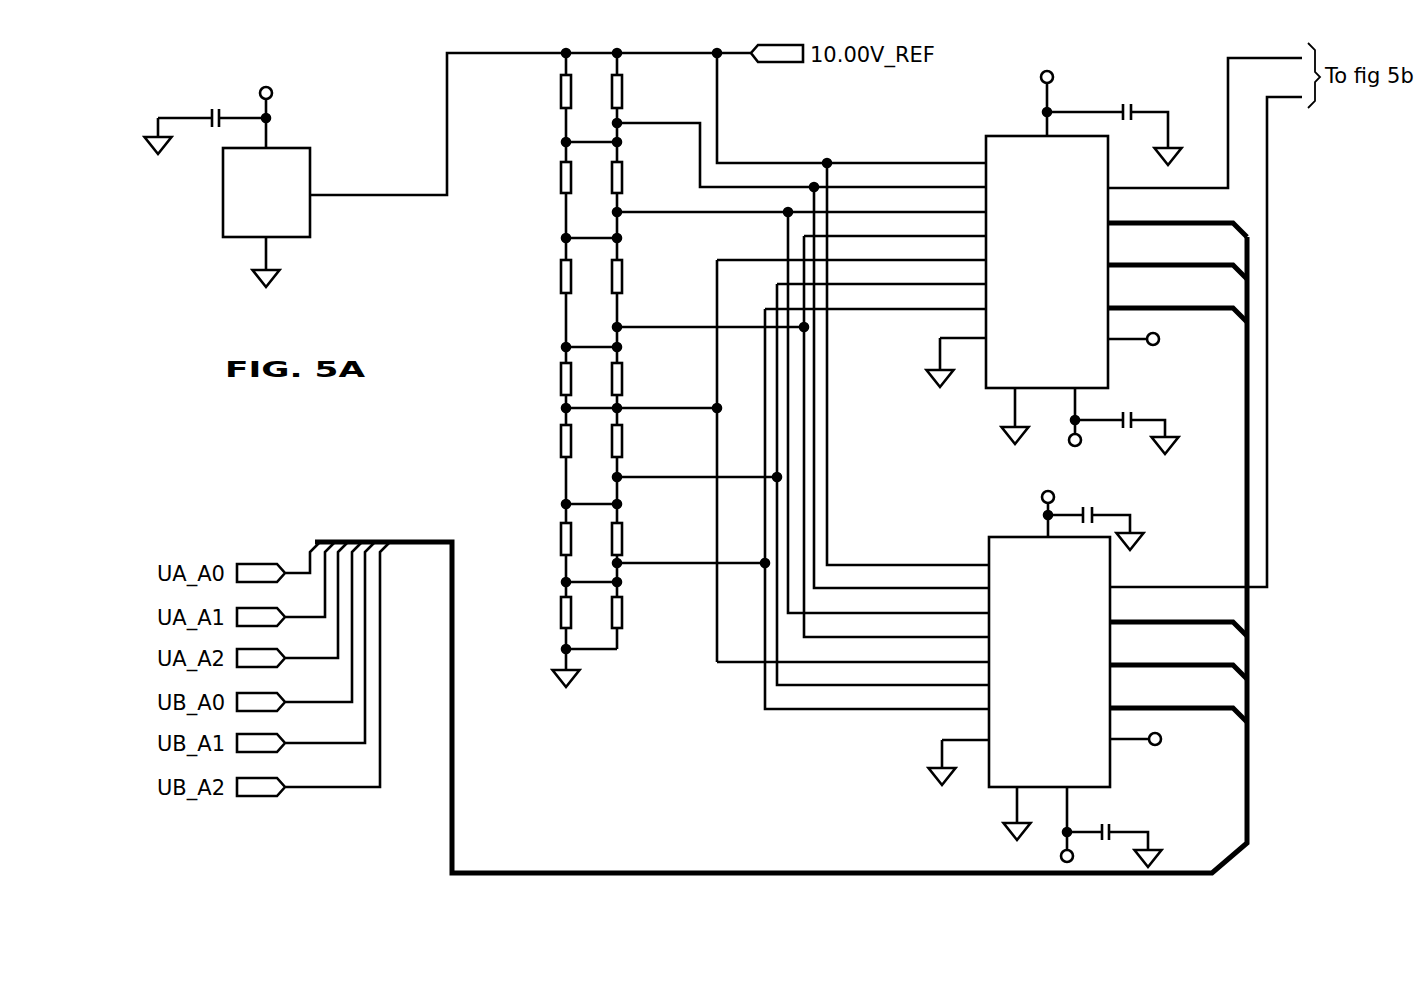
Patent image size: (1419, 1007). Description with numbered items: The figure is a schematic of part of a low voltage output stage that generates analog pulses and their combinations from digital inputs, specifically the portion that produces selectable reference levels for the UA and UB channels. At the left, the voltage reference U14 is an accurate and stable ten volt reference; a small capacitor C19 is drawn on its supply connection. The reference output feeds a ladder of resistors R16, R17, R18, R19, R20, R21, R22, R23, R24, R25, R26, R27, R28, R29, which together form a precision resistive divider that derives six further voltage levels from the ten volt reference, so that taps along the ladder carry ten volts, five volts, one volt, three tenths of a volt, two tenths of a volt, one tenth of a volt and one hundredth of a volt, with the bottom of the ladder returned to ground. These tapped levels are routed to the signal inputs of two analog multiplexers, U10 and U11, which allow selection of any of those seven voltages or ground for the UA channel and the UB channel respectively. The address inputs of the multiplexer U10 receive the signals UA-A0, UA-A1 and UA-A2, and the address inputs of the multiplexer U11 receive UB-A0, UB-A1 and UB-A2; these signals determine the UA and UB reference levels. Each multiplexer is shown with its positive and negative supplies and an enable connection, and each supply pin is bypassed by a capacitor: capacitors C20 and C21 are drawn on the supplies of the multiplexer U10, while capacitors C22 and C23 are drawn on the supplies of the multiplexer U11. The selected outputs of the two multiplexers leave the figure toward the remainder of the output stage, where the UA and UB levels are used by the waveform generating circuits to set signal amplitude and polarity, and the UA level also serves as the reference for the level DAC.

The voltage reference U14 is at (487, 170).
The capacitor C19 is at (206, 106).
The resistor R16 is at (524, 94).
The resistor R17 is at (641, 94).
The resistor R18 is at (524, 180).
The resistor R19 is at (650, 170).
The resistor R20 is at (524, 281).
The resistor R21 is at (641, 281).
The resistor R22 is at (533, 379).
The resistor R23 is at (641, 379).
The resistor R24 is at (533, 439).
The resistor R25 is at (641, 439).
The resistor R26 is at (527, 545).
The resistor R27 is at (651, 528).
The resistor R28 is at (533, 607).
The resistor R29 is at (641, 607).
The analog multiplexer U10 is at (1070, 254).
The capacitor C20 is at (1114, 109).
The capacitor C21 is at (1129, 408).
The analog multiplexer U11 is at (1094, 482).
The capacitor C22 is at (1109, 508).
The capacitor C23 is at (1119, 824).